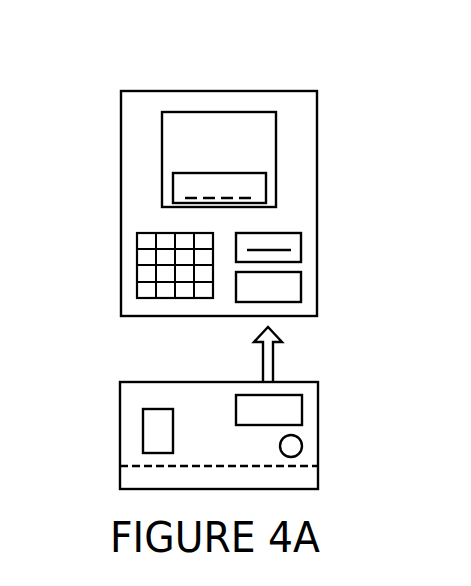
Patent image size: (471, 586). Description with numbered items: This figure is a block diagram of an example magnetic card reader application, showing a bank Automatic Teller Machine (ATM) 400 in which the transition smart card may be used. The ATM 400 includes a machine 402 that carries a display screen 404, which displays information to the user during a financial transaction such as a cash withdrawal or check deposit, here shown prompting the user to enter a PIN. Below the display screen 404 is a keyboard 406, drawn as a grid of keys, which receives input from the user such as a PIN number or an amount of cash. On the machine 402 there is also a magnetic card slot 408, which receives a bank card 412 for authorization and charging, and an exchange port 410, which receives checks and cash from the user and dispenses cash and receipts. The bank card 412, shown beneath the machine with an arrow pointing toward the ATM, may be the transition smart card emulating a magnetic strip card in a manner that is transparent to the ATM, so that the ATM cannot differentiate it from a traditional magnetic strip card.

The bank Automatic Teller Machine (ATM) 400 is at (100, 43).
The machine 402 is at (121, 122).
The display screen 404 is at (172, 160).
The keyboard 406 is at (137, 272).
The magnetic card slot 408 is at (301, 245).
The exchange port 410 is at (301, 285).
The bank card 412 is at (112, 415).